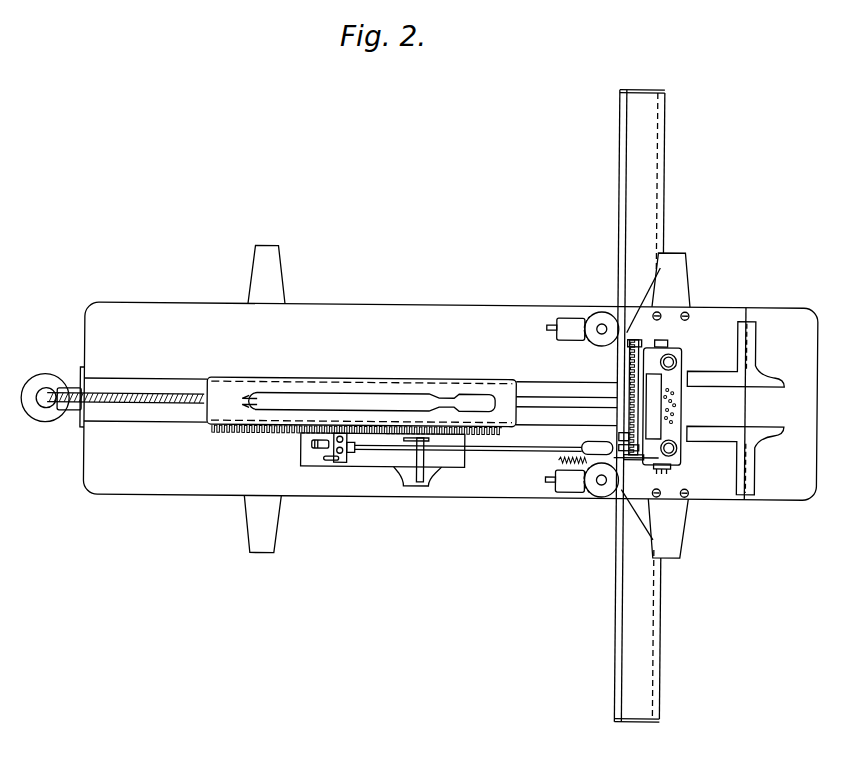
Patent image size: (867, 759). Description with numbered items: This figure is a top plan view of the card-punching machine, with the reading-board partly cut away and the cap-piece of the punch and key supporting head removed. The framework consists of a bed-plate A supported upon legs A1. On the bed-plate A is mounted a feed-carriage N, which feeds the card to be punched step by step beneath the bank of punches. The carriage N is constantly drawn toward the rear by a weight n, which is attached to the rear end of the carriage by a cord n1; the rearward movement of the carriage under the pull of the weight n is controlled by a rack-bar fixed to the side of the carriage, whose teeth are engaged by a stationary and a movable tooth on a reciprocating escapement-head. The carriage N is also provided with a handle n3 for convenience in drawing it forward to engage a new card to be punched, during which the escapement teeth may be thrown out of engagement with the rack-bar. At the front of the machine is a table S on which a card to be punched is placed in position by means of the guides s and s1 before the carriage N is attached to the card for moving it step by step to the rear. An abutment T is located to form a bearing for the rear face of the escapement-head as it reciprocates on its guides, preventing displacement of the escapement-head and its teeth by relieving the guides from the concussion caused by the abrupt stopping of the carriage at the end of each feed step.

The weight n is at (48, 422).
The cord n1 is at (143, 408).
The handle n3 is at (368, 394).
The feed-carriage N is at (328, 376).
The bed-plate A is at (448, 401).
The legs A1 is at (467, 401).
The abutment T is at (330, 461).
The guide s is at (762, 374).
The guide s1 is at (768, 428).
The table S is at (768, 404).